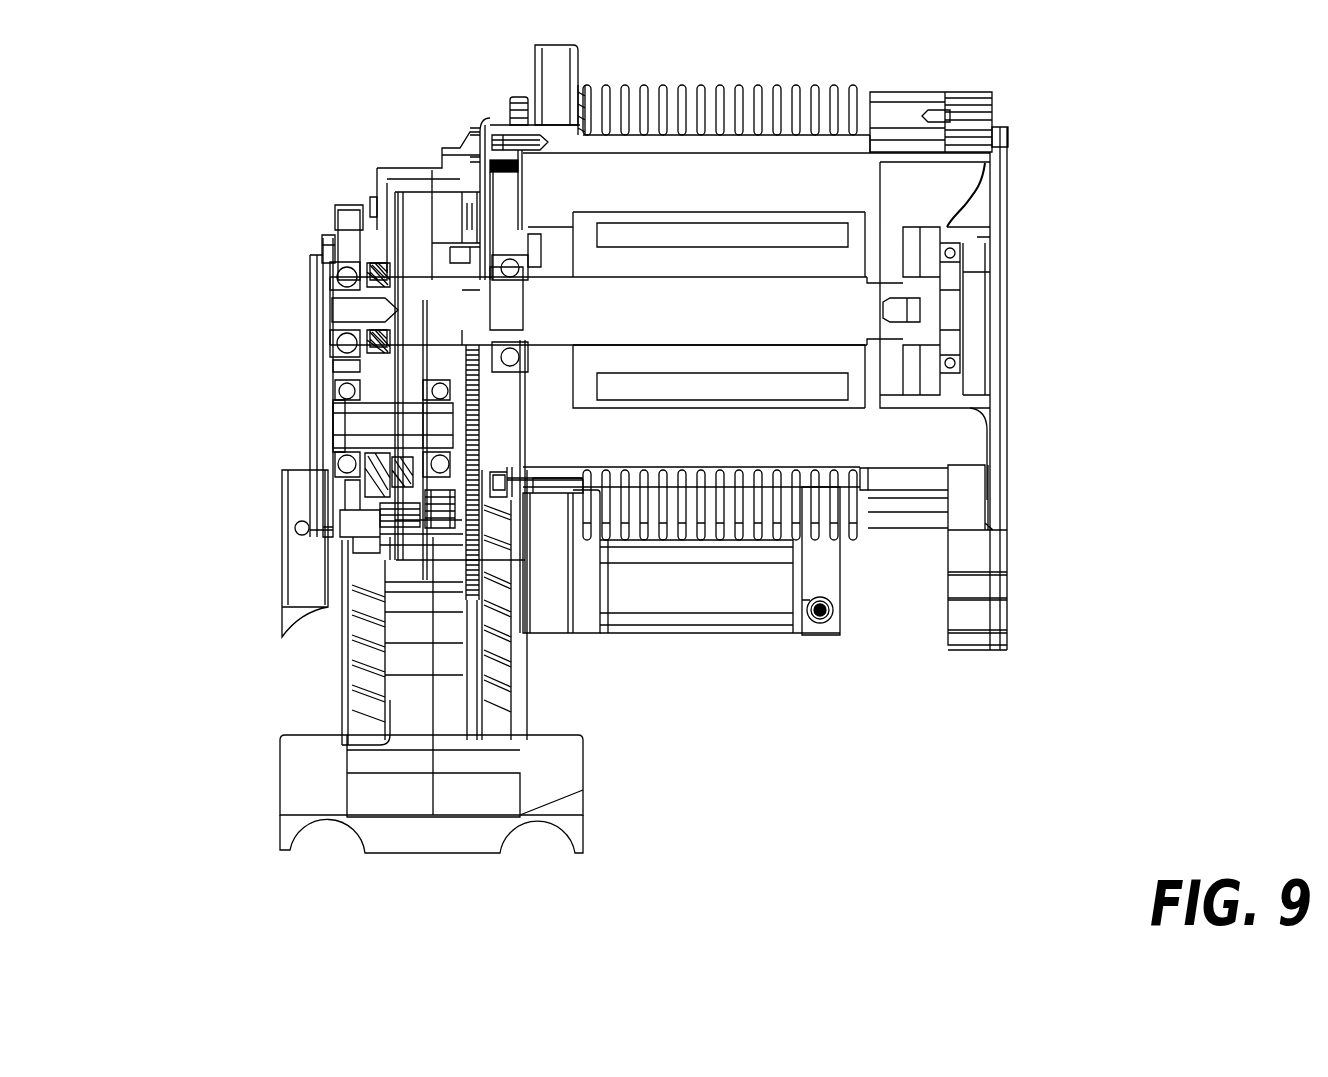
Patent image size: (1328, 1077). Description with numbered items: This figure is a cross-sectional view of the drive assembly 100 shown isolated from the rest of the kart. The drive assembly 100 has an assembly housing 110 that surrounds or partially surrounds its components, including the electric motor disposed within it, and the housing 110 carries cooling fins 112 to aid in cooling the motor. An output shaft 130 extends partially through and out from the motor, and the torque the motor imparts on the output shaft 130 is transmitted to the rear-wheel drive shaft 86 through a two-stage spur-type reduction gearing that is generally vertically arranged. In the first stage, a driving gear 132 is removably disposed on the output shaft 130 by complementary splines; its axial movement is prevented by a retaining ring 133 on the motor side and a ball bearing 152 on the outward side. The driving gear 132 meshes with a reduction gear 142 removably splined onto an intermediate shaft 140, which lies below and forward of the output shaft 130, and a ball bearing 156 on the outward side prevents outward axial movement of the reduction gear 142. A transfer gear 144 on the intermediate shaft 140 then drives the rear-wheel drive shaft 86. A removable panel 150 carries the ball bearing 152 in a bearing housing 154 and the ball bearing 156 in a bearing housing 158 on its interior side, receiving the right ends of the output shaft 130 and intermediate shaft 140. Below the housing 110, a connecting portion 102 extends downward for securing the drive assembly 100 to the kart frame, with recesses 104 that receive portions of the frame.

The drive assembly 100 is at (208, 112).
The cooling fins 112 is at (757, 85).
The assembly housing 110 is at (447, 212).
The output shaft 130 is at (606, 322).
The retaining ring 133 is at (393, 268).
The bearing housing 154 is at (330, 238).
The driving gear 132 is at (320, 287).
The ball bearing 152 is at (338, 344).
The removable panel 150 is at (340, 352).
The bearing housing 158 is at (340, 367).
The reduction gear 142 is at (335, 386).
The ball bearing 156 is at (340, 411).
The intermediate shaft 140 is at (345, 440).
The transfer gear 144 is at (408, 483).
The rear-wheel drive shaft 86 is at (303, 578).
The connecting portion 102 is at (557, 763).
The recess 104 is at (327, 843).